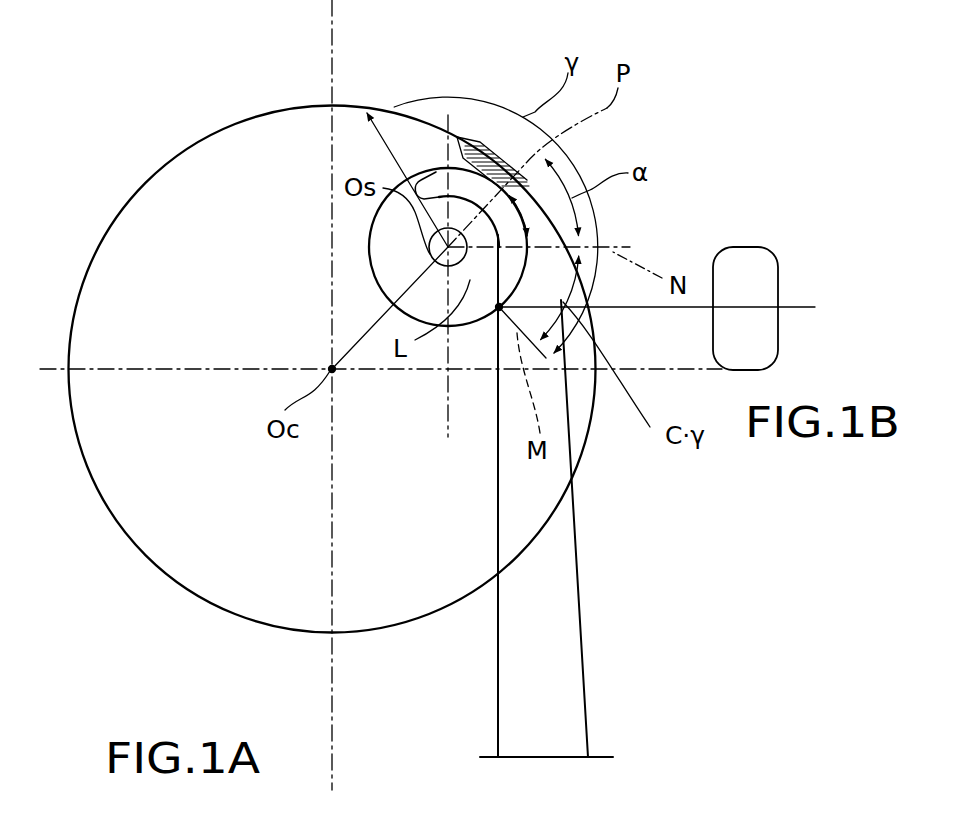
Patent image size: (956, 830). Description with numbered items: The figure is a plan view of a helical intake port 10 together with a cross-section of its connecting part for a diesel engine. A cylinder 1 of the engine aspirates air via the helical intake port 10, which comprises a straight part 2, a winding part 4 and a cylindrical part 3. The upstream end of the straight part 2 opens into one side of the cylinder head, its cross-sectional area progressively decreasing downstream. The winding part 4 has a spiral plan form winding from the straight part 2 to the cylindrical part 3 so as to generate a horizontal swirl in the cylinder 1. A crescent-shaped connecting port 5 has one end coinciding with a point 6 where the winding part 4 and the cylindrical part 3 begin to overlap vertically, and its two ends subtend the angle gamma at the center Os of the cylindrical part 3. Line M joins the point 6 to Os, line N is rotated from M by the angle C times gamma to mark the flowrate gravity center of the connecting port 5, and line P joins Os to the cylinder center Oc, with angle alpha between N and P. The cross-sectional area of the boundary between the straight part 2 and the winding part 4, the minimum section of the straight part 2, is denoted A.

In FIG. 1A, the cylinder 1 is at (208, 137).
In FIG. 1A, the straight part 2 is at (583, 496).
In FIG. 1A, the cylindrical part 3 is at (372, 268).
In FIG. 1A, the winding part 4 is at (542, 228).
In FIG. 1A, the connecting port 5 is at (432, 190).
In FIG. 1A, the point 6 is at (499, 309).
In FIG. 1A, the helical intake port 10 is at (590, 692).
In FIG. 1B, the cross-sectional area A is at (763, 263).